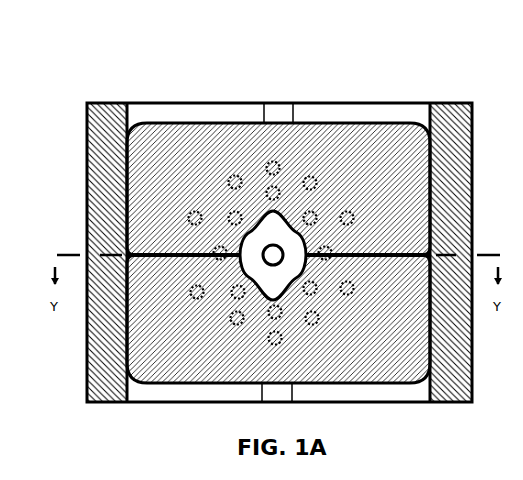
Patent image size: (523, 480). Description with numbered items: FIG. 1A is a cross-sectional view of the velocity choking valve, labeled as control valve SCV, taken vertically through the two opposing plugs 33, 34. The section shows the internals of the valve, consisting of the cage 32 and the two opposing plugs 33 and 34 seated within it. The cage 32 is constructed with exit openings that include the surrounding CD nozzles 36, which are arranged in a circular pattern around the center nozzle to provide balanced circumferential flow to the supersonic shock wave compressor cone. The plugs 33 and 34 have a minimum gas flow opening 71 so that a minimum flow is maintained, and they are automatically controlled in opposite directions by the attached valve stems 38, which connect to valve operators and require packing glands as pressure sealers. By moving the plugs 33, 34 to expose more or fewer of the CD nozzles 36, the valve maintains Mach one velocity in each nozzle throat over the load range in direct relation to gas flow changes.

The control valve SCV is at (275, 218).
The cage 32 is at (87, 200).
The plug 33 is at (180, 124).
The plug 34 is at (160, 386).
The CD nozzles 36 is at (190, 292).
The valve stems 38 is at (276, 103).
The minimum gas flow opening 71 is at (307, 272).